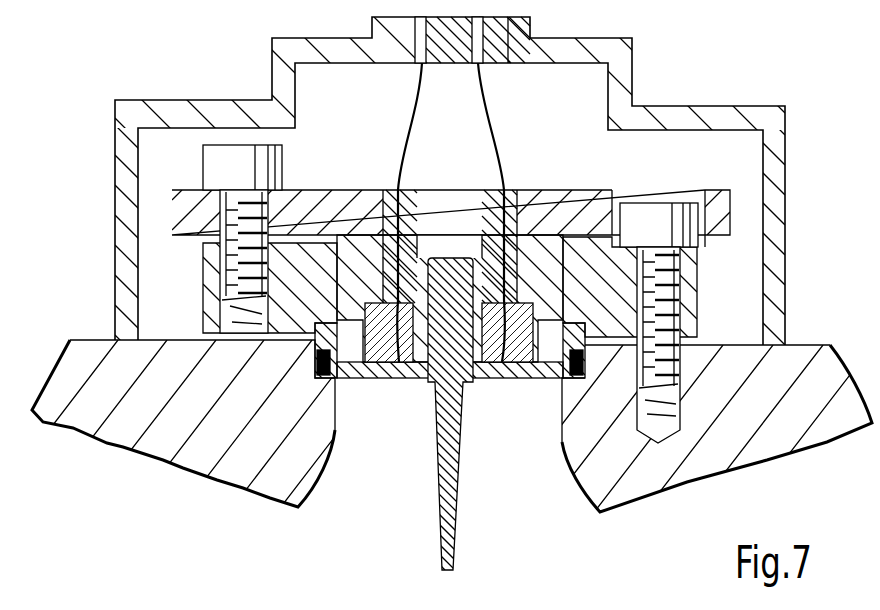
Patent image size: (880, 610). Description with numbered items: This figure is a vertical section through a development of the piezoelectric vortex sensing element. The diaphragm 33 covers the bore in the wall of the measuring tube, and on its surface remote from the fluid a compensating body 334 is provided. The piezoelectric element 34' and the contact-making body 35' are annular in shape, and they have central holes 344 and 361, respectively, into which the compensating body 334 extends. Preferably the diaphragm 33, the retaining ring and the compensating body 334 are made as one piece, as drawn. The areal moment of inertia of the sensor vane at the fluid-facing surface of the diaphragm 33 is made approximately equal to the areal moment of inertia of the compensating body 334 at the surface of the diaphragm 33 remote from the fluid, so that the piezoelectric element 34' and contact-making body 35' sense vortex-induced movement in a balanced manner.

The diaphragm 33 is at (366, 383).
The compensating body 334 is at (462, 285).
The central hole 344 is at (418, 382).
The central hole 361 is at (493, 360).
The piezoelectric element 34' is at (450, 365).
The contact-making body 35' is at (452, 440).